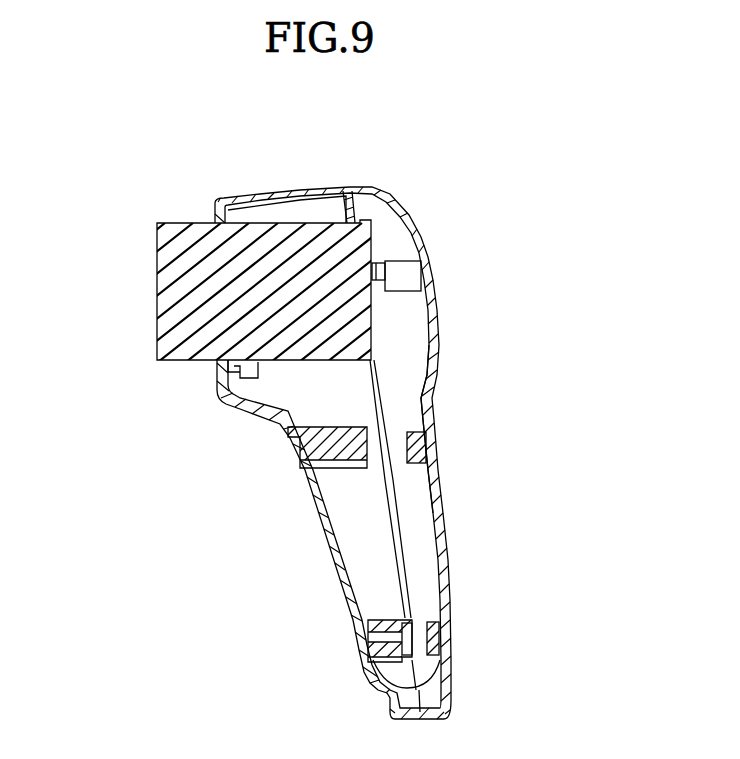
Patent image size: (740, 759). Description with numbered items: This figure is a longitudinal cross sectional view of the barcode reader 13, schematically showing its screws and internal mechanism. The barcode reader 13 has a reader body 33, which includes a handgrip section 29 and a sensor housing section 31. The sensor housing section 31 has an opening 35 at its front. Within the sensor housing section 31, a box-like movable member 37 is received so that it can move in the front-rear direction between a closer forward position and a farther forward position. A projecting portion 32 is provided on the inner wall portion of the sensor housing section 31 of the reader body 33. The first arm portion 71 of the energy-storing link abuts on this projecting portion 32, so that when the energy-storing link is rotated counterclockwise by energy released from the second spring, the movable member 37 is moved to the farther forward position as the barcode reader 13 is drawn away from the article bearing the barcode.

The barcode reader 13 is at (369, 183).
The handgrip section 29 is at (405, 518).
The sensor housing section 31 is at (413, 348).
The projecting portion 32 is at (410, 273).
The reader body 33 is at (512, 528).
The opening 35 is at (215, 358).
The movable member 37 is at (188, 228).
The first arm portion 71 is at (380, 262).